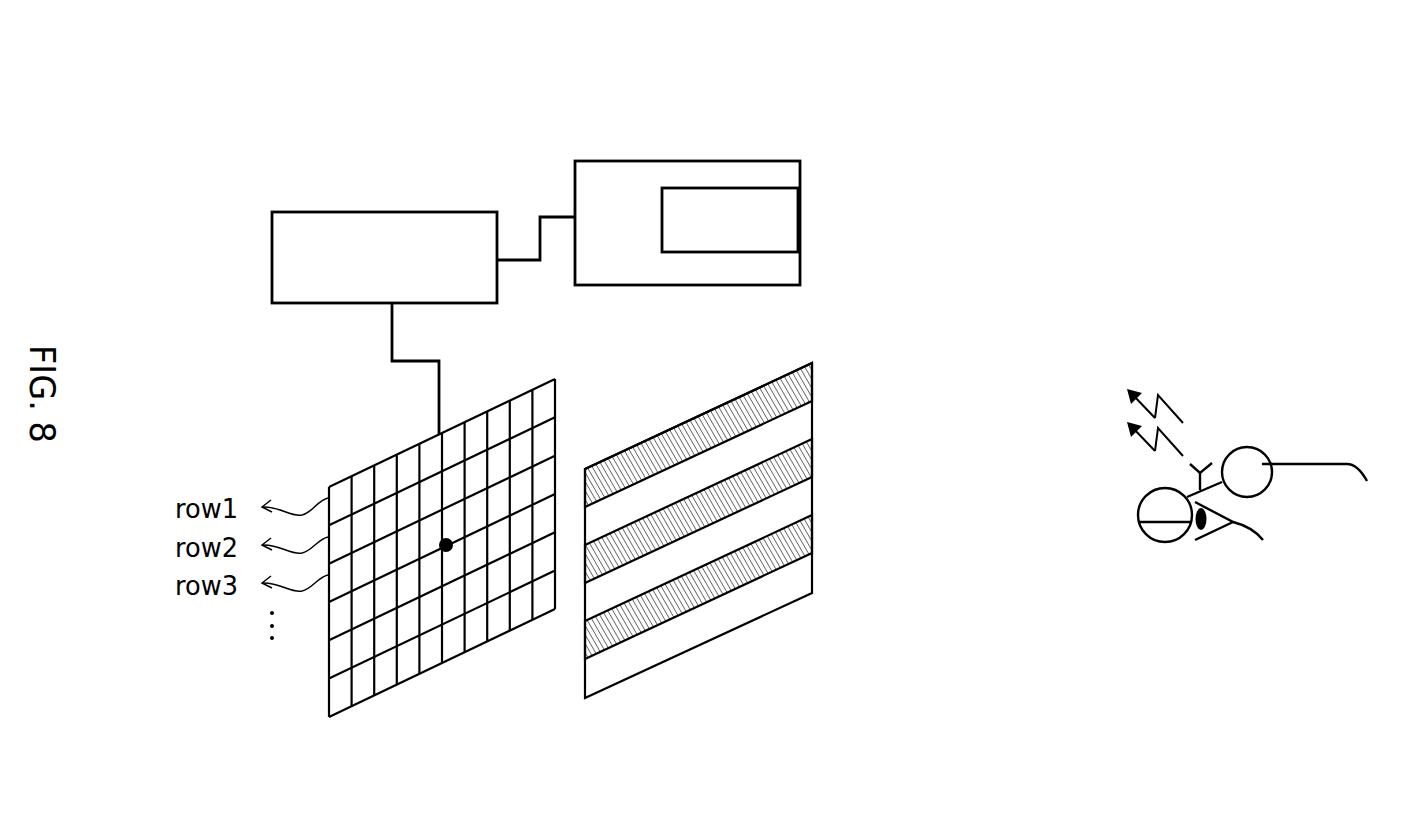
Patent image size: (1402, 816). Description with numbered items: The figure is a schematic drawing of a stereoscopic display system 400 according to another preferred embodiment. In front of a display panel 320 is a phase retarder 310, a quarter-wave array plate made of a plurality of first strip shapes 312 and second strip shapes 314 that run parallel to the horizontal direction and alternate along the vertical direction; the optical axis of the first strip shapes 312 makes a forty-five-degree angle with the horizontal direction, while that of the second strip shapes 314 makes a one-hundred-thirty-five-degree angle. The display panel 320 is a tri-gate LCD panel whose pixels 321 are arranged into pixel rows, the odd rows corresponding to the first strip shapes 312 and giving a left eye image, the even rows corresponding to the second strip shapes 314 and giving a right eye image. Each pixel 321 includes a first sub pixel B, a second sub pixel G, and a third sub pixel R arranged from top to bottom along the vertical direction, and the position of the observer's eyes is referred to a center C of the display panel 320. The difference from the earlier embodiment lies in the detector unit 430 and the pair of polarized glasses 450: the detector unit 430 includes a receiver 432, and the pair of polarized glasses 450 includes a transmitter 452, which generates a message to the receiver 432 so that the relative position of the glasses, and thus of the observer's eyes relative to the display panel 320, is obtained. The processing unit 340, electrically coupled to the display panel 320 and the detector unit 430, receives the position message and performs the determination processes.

The stereoscopic display system 400 is at (203, 90).
The processing unit 340 is at (272, 255).
The detector unit 430 is at (712, 160).
The receiver 432 is at (800, 222).
The display panel 320 is at (527, 390).
The pixel 321 is at (453, 643).
The phase retarder 310 is at (744, 496).
The first strip shapes 312 is at (797, 395).
The second strip shapes 314 is at (793, 497).
The pair of polarized glasses 450 is at (1178, 444).
The transmitter 452 is at (1182, 477).
The first sub pixel B is at (419, 450).
The second sub pixel G is at (420, 456).
The third sub pixel R is at (420, 474).
The center of the display panel C is at (446, 550).